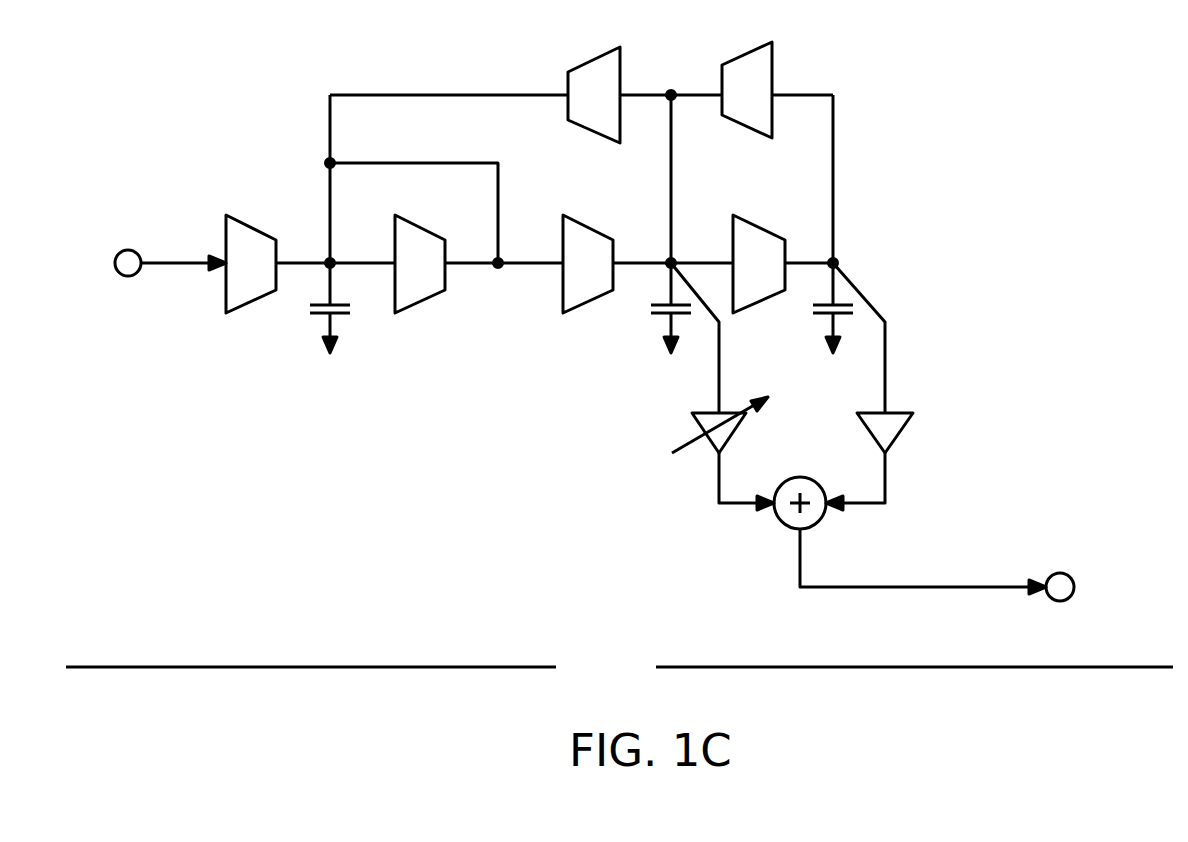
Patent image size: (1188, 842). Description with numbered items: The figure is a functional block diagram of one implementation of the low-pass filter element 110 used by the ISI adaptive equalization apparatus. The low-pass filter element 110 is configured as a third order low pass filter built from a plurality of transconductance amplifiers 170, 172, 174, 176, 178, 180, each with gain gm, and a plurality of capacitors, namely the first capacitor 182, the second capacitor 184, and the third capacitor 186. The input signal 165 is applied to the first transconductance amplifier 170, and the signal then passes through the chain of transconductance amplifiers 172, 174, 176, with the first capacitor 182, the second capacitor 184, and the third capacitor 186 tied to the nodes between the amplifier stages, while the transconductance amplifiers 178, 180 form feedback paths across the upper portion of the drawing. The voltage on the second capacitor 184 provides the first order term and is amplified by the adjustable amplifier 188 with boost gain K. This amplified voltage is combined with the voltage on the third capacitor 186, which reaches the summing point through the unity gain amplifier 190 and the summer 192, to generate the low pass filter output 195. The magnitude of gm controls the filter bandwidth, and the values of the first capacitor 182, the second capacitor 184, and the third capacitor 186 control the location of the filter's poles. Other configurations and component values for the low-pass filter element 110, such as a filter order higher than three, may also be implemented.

The low-pass filter element 110 is at (630, 688).
The input signal Vin 165 is at (122, 277).
The first transconductance amplifier 170 is at (280, 241).
The transconductance amplifier 172 is at (450, 243).
The transconductance amplifier 174 is at (618, 242).
The transconductance amplifier 176 is at (790, 242).
The transconductance amplifier 178 is at (778, 65).
The transconductance amplifier 180 is at (624, 69).
The capacitor C1 182 is at (327, 320).
The capacitor C2 184 is at (667, 320).
The capacitor C3 186 is at (829, 320).
The adjustable amplifier 188 is at (704, 429).
The unity gain amplifier 190 is at (896, 439).
The summer 192 is at (773, 487).
The low pass filter output Vout 195 is at (1071, 599).